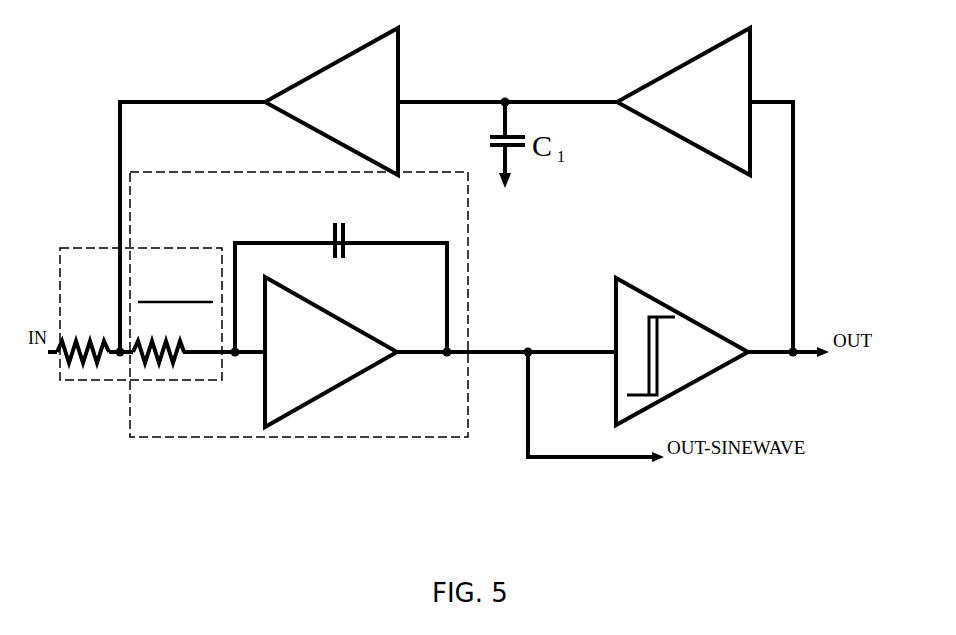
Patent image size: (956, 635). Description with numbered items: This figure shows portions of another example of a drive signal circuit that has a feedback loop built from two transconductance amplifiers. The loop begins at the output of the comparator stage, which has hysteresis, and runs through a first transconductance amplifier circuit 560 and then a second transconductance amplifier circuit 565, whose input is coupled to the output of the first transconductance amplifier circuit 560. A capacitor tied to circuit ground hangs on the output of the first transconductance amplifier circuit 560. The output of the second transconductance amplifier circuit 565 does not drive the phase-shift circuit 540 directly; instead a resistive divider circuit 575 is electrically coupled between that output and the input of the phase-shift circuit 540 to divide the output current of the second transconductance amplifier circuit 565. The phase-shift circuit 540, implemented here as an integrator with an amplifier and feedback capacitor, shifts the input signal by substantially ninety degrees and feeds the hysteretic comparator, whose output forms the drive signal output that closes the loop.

The first transconductance amplifier circuit 560 is at (752, 52).
The second transconductance amplifier circuit 565 is at (398, 52).
The phase-shift circuit 540 is at (468, 263).
The resistive divider circuit 575 is at (60, 262).